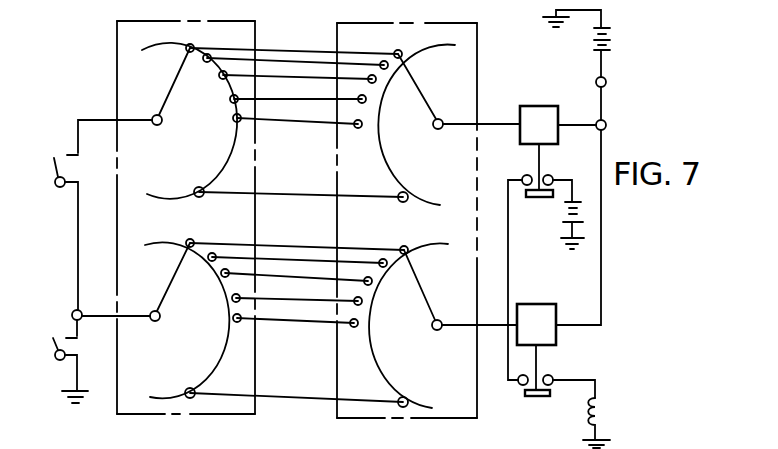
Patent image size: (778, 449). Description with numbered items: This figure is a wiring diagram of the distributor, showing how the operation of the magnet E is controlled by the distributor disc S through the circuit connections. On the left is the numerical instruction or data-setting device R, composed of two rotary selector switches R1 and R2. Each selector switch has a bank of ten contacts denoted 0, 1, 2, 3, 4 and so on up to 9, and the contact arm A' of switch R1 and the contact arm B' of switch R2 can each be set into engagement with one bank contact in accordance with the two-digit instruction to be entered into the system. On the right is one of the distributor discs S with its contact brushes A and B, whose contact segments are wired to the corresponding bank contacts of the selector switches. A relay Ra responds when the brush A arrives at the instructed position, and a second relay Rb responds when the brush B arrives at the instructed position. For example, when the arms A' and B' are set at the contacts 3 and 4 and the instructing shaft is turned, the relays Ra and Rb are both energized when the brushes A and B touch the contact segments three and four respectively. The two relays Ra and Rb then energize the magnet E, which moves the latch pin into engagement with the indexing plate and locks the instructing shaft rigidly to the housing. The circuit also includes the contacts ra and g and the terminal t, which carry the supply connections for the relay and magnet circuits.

The bank contact 0 is at (295, 154).
The bank contact 1 is at (298, 165).
The bank contact 2 is at (295, 178).
The bank contact 3 is at (296, 201).
The bank contact 4 is at (297, 224).
The bank contact 9 is at (295, 289).
The numerical instruction device R is at (119, 34).
The rotary selector switch R1 is at (133, 302).
The rotary selector switch R2 is at (140, 107).
The distributor disc S is at (472, 62).
The contact brush A is at (427, 290).
The contact arm A' is at (163, 282).
The contact brush B is at (425, 91).
The contact arm B' is at (166, 86).
The contact ra is at (54, 160).
The contact g is at (53, 338).
The terminal t is at (607, 81).
The magnet E is at (602, 423).
The second relay Rb is at (539, 125).
The relay Ra is at (536, 324).